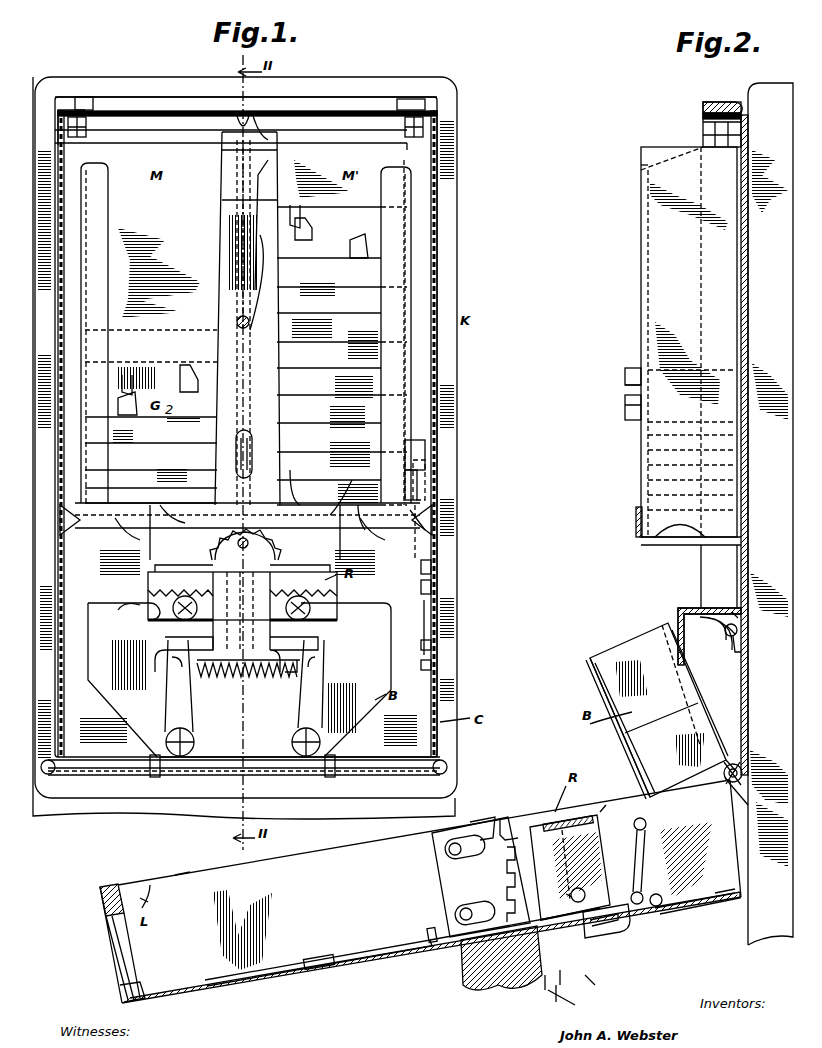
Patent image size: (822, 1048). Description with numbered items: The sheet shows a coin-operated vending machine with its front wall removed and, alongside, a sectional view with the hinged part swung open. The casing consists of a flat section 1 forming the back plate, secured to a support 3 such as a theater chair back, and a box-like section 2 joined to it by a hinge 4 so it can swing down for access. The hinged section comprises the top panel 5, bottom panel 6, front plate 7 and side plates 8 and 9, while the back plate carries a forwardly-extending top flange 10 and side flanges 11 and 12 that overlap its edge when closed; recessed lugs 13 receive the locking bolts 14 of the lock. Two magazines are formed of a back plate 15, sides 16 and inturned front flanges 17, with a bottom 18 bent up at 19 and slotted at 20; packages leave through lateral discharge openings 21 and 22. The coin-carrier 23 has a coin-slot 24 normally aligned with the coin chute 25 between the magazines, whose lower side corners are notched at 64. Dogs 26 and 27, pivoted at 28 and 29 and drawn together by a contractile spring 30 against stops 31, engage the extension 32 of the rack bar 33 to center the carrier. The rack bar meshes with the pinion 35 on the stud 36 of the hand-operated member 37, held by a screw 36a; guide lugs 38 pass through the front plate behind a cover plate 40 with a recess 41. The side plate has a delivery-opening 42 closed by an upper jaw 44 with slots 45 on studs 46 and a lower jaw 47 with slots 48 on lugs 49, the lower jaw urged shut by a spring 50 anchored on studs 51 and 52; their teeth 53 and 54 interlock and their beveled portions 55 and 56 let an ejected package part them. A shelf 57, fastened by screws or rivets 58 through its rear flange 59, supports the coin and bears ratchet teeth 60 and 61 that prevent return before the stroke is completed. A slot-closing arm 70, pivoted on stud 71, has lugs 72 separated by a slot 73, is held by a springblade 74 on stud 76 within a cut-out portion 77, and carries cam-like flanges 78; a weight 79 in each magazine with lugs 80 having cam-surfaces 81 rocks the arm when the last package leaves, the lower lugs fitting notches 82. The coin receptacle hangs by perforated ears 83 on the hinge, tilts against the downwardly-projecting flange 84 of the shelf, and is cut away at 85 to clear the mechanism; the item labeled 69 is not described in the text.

In FIG. 1, the flat section 1 is at (418, 402).
In FIG. 2, the flat section 1 is at (745, 503).
In FIG. 1, the box-like section 2 is at (58, 711).
In FIG. 1, the support 3 is at (48, 814).
In FIG. 2, the support 3 is at (770, 100).
In FIG. 1, the hinge 4 is at (447, 768).
In FIG. 2, the hinge 4 is at (725, 780).
In FIG. 1, the top panel 5 is at (312, 110).
In FIG. 1, the bottom panel 6 is at (375, 762).
In FIG. 2, the bottom panel 6 is at (745, 750).
In FIG. 1, the front plate 7 is at (385, 963).
In FIG. 1, the side plate 8 is at (58, 178).
In FIG. 1, the side plate 9 is at (440, 272).
In FIG. 1, the top flange 10 is at (365, 100).
In FIG. 2, the top flange 10 is at (722, 112).
In FIG. 1, the side flange 11 is at (58, 128).
In FIG. 2, the side flange 11 is at (712, 590).
In FIG. 1, the side flange 12 is at (440, 232).
In FIG. 1, the recessed lug 13 is at (85, 118).
In FIG. 2, the recessed lug 13 is at (742, 135).
In FIG. 1, the locking bolt 14 is at (110, 886).
In FIG. 1, the back plate 15 is at (165, 150).
In FIG. 2, the back plate 15 is at (749, 258).
In FIG. 2, the side 16 is at (662, 272).
In FIG. 1, the front flange 17 is at (100, 200).
In FIG. 2, the front flange 17 is at (648, 340).
In FIG. 1, the bottom 18 is at (360, 515).
In FIG. 2, the bottom 18 is at (740, 550).
In FIG. 1, the upwardly-bent portion 19 is at (155, 540).
In FIG. 2, the upwardly-bent portion 19 is at (634, 518).
In FIG. 1, the slot 20 is at (245, 546).
In FIG. 2, the slot 20 is at (672, 545).
In FIG. 1, the lateral discharge opening 21 is at (78, 530).
In FIG. 1, the lateral discharge opening 22 is at (412, 530).
In FIG. 1, the coin-carrier 23 is at (603, 805).
In FIG. 1, the coin-slot 24 is at (280, 580).
In FIG. 1, the coin chute 25 is at (238, 180).
In FIG. 1, the dog 26 is at (168, 700).
In FIG. 1, the dog 27 is at (324, 692).
In FIG. 1, the pivot 28 is at (195, 740).
In FIG. 1, the pivot 29 is at (292, 740).
In FIG. 1, the contractile spring 30 is at (250, 680).
In FIG. 1, the stop 31 is at (178, 658).
In FIG. 1, the extension 32 is at (226, 680).
In FIG. 1, the rack bar 33 is at (330, 608).
In FIG. 1, the pinion 35 is at (296, 498).
In FIG. 1, the stud 36 is at (210, 560).
In FIG. 1, the screw 36a is at (560, 1000).
In FIG. 1, the hand-operated member 37 is at (548, 988).
In FIG. 1, the guide lug 38 is at (175, 618).
In FIG. 1, the cover plate 40 is at (630, 925).
In FIG. 1, the recess 41 is at (615, 928).
In FIG. 1, the delivery-opening 42 is at (503, 820).
In FIG. 1, the upper jaw 44 is at (420, 452).
In FIG. 1, the slot 45 is at (470, 910).
In FIG. 1, the stud 46 is at (426, 474).
In FIG. 1, the lower jaw 47 is at (432, 588).
In FIG. 1, the slot 48 is at (556, 868).
In FIG. 1, the lug 49 is at (432, 568).
In FIG. 1, the spring 50 is at (424, 626).
In FIG. 1, the stud 51 is at (432, 666).
In FIG. 2, the stud 51 is at (676, 790).
In FIG. 1, the stud 52 is at (432, 646).
In FIG. 1, the teeth 53 is at (557, 907).
In FIG. 1, the teeth 54 is at (508, 880).
In FIG. 1, the beveled portion 55 is at (418, 510).
In FIG. 1, the beveled portion 56 is at (428, 528).
In FIG. 2, the shelf 57 is at (738, 632).
In FIG. 2, the screws or rivets 58 is at (740, 610).
In FIG. 2, the rear flange 59 is at (741, 660).
In FIG. 1, the ratchet teeth 60 is at (160, 580).
In FIG. 2, the ratchet teeth 60 is at (706, 618).
In FIG. 1, the ratchet teeth 61 is at (268, 590).
In FIG. 2, the notch 64 is at (682, 527).
In FIG. 1, the lug 69 is at (478, 820).
In FIG. 1, the arm 70 is at (224, 160).
In FIG. 1, the stud 71 is at (237, 322).
In FIG. 1, the lug 72 is at (262, 130).
In FIG. 1, the slot 73 is at (242, 125).
In FIG. 1, the springblade 74 is at (255, 450).
In FIG. 1, the stud 76 is at (278, 420).
In FIG. 1, the cut-out portion 77 is at (235, 458).
In FIG. 1, the cam-like flange 78 is at (178, 518).
In FIG. 1, the weight 79 is at (122, 375).
In FIG. 1, the lug 80 is at (140, 395).
In FIG. 1, the cam-surface 81 is at (190, 392).
In FIG. 1, the notch 82 is at (128, 535).
In FIG. 1, the perforated ear 83 is at (155, 778).
In FIG. 2, the downwardly-projecting flange 84 is at (668, 632).
In FIG. 1, the cut-away portion 85 is at (120, 600).
In FIG. 2, the cut-away portion 85 is at (594, 675).